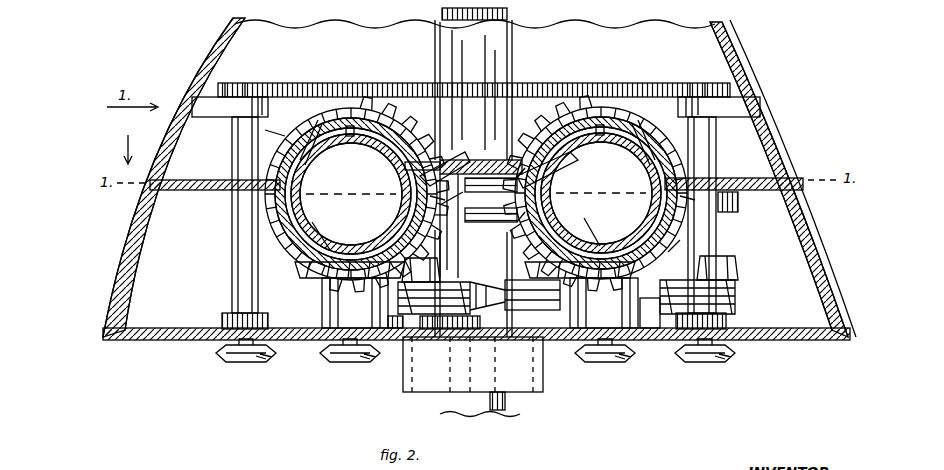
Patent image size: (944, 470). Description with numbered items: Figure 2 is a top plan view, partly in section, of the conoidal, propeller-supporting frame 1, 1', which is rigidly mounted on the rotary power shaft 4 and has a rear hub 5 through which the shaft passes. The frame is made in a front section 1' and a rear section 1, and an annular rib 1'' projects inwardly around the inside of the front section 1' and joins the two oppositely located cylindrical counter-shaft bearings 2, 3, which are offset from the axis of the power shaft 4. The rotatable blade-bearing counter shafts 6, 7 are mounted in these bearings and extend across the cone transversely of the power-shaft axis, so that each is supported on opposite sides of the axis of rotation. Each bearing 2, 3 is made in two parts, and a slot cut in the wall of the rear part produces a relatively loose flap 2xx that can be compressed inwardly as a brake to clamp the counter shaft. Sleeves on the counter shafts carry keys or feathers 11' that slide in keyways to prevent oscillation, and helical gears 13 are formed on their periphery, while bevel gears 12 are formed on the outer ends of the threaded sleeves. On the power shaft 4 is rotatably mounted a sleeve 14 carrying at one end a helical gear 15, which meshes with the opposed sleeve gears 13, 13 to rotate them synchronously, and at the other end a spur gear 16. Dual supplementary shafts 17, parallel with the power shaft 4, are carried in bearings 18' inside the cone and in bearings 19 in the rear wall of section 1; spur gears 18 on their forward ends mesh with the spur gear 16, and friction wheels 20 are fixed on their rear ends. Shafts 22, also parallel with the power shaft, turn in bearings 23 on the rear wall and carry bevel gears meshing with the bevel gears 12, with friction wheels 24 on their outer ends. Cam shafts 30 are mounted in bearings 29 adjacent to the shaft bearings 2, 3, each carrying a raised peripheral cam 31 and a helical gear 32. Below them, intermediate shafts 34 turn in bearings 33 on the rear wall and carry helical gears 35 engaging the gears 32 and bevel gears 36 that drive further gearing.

The frame section 1 is at (476, 180).
The front section of frame 1' is at (474, 177).
The annular rib 1'' is at (521, 178).
The counter-shaft bearing 2 is at (622, 160).
The flap 2xx is at (463, 225).
The counter-shaft bearing 3 is at (358, 160).
The power shaft 4 is at (508, 15).
The rear hub 5 is at (543, 392).
The blade-bearing counter shaft 6 is at (552, 178).
The blade-bearing counter shaft 7 is at (306, 180).
The key 11' is at (475, 146).
The bevel gear 12 is at (472, 194).
The helical gear 13 is at (425, 110).
The sleeve 14 is at (450, 120).
The helical gear 15 is at (516, 146).
The spur gear 16 is at (531, 88).
The supplementary shaft 17 is at (238, 165).
The spur gear 18 is at (468, 76).
The bearing 18' is at (476, 116).
The bearing 19 is at (268, 320).
The friction wheel 20 is at (246, 362).
The shaft 22 is at (296, 268).
The bearing 23 is at (480, 303).
The friction wheel 24 is at (350, 362).
The bearing 29 is at (468, 166).
The cam shaft 30 is at (460, 233).
The cam 31 is at (404, 207).
The helical gear 32 is at (462, 282).
The bearing 33 is at (388, 340).
The intermediate shaft 34 is at (516, 300).
The helical gear 35 is at (732, 264).
The bevel gear 36 is at (512, 308).